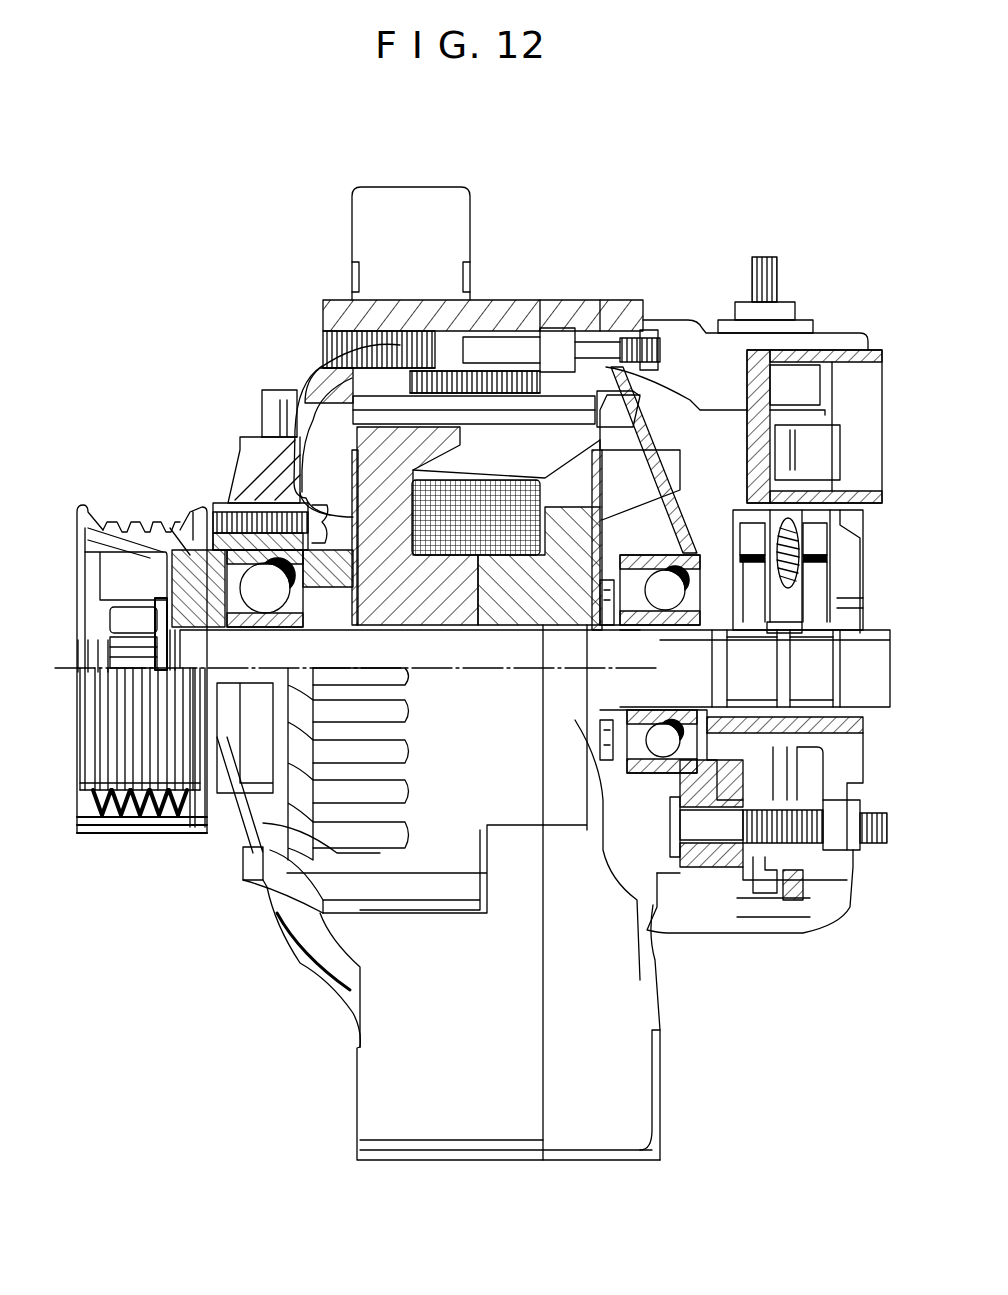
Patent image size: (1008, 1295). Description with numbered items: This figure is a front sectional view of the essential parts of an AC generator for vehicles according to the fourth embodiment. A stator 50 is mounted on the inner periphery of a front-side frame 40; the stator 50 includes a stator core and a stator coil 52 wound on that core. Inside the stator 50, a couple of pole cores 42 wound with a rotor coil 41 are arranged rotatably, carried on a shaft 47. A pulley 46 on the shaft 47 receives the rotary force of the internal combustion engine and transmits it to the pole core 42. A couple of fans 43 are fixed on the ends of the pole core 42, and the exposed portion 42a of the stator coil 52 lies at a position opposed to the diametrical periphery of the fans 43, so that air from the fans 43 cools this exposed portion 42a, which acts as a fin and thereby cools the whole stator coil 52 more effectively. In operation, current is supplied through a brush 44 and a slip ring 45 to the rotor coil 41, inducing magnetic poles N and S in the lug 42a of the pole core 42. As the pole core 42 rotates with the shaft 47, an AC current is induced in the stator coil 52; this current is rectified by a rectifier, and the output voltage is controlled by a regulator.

The front-side frame 40 is at (346, 312).
The rotor coil 41 is at (413, 512).
The pole core 42 is at (377, 483).
The lug 42a is at (463, 455).
The fan 43 is at (300, 430).
The brush 44 is at (817, 595).
The slip ring 45 is at (757, 660).
The pulley 46 is at (108, 522).
The shaft 47 is at (217, 643).
The stator 50 is at (547, 403).
The stator coil 52 is at (563, 440).